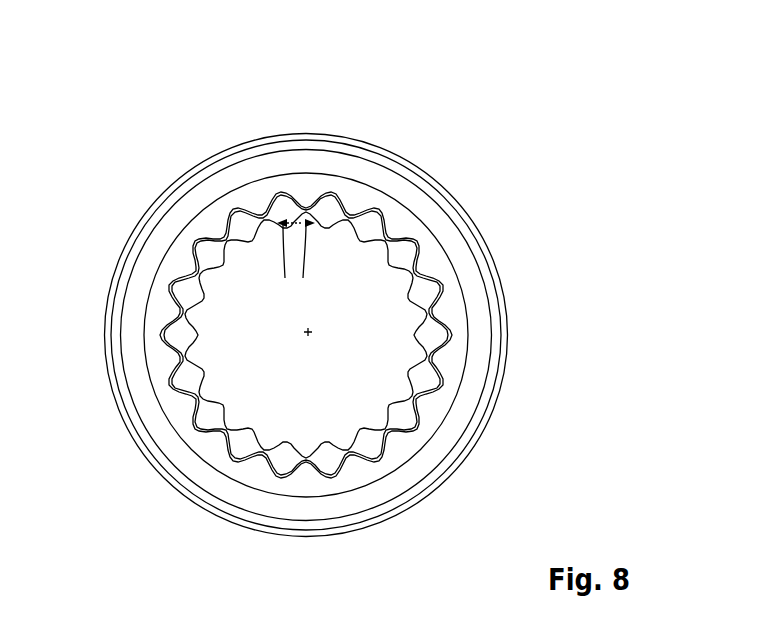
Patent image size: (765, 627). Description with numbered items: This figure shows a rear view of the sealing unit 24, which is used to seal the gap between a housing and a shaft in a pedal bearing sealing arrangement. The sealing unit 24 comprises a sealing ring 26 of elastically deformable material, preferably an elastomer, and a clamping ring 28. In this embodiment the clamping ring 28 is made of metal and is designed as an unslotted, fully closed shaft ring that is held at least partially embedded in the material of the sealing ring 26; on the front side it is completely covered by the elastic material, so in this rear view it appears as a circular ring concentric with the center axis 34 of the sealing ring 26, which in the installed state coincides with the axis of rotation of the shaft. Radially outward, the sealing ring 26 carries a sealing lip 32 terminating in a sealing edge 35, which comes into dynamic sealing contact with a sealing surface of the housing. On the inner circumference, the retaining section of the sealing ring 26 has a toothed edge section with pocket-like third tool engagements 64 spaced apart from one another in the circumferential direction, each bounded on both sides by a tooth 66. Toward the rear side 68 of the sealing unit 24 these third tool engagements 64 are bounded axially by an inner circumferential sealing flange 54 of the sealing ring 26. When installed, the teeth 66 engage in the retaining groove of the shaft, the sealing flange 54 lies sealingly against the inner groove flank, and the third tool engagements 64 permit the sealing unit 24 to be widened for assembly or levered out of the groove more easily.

The sealing unit 24 is at (548, 146).
The sealing ring 26 is at (153, 258).
The clamping ring 28 is at (452, 335).
The sealing lip 32 is at (247, 152).
The center axis 34 is at (305, 333).
The sealing edge 35 is at (363, 145).
The sealing flange 54 is at (215, 242).
The third tool engagements 64 is at (296, 263).
The tooth 66 is at (427, 308).
The rear side 68 is at (462, 288).